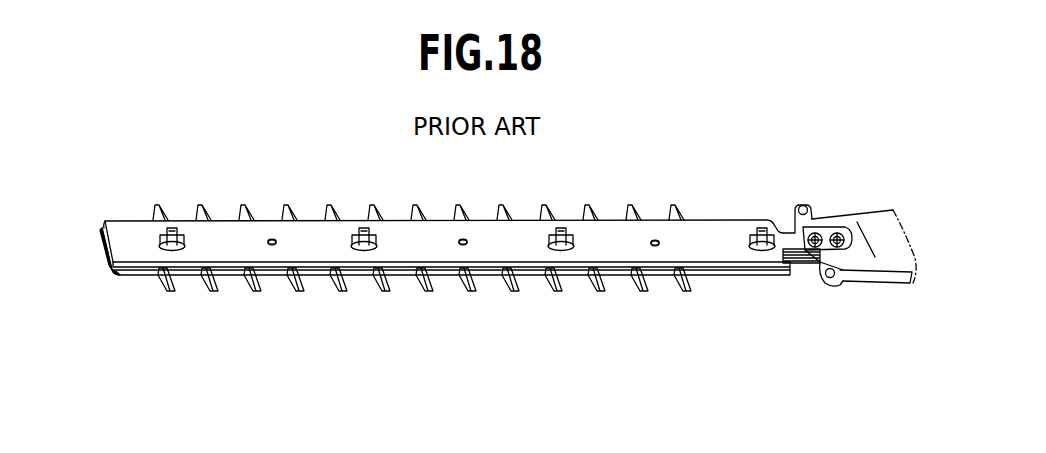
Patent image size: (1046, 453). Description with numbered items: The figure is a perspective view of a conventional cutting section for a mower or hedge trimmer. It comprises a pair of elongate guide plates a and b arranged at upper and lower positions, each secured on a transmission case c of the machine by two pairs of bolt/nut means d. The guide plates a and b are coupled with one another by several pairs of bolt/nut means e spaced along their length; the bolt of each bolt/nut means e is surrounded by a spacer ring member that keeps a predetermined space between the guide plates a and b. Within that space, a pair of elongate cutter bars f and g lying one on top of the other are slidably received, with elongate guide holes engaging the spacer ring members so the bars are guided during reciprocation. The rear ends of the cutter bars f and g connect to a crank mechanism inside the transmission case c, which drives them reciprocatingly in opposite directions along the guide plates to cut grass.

The elongate guide plate a is at (125, 220).
The elongate guide plate b is at (133, 277).
The transmission case c is at (889, 213).
The bolt/nut means d is at (838, 236).
The bolt/nut means e is at (175, 226).
The elongate cutter bar f is at (462, 280).
The elongate cutter bar g is at (471, 289).